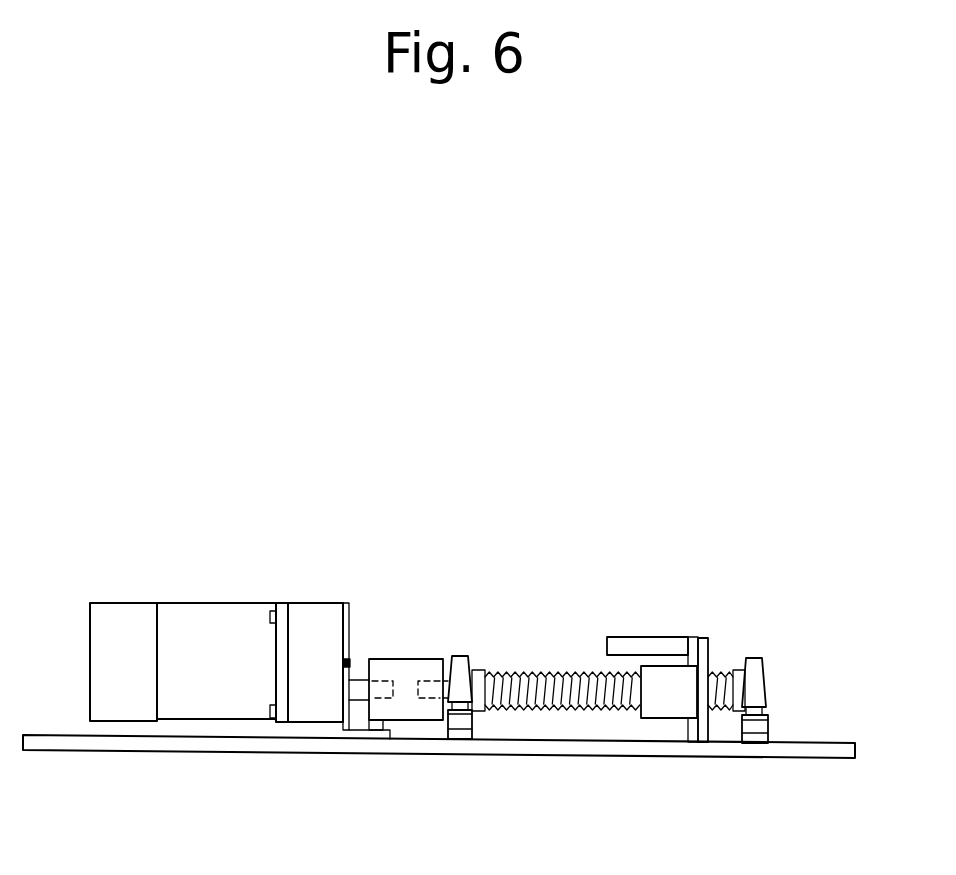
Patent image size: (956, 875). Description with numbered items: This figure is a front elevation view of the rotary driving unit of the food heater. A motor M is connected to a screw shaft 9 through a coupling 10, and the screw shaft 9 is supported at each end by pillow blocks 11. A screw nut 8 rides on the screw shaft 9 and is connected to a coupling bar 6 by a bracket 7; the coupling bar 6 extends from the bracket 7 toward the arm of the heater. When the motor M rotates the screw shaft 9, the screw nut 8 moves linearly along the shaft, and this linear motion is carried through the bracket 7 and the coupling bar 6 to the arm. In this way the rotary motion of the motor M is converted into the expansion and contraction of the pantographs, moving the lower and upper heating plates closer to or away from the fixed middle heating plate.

The motor M is at (211, 623).
The coupling bar 6 is at (661, 638).
The bracket 7 is at (705, 658).
The screw nut 8 is at (670, 700).
The screw shaft 9 is at (548, 672).
The coupling 10 is at (406, 663).
The pillow blocks 11 is at (462, 655).